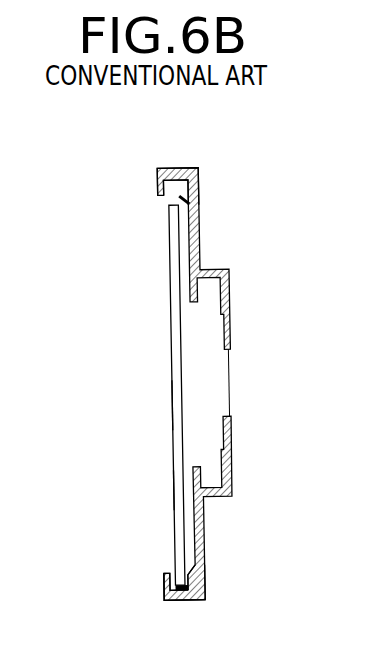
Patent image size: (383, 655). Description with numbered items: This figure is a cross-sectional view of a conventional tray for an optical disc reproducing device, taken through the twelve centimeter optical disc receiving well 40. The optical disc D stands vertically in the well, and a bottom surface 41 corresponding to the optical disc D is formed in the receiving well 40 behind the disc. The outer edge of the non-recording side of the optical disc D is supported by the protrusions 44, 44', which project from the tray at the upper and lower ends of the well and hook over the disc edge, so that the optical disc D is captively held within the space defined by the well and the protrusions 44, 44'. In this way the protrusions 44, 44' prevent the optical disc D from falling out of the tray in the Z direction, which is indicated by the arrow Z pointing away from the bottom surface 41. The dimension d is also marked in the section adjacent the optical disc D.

The bottom surface 41 is at (190, 222).
The protrusion 44' is at (148, 215).
The protrusion 44 is at (154, 555).
The 12 cm optical disc receiving well 40 is at (199, 597).
The optical disc D is at (174, 306).
The gap d is at (172, 490).
The Z direction Z is at (158, 395).